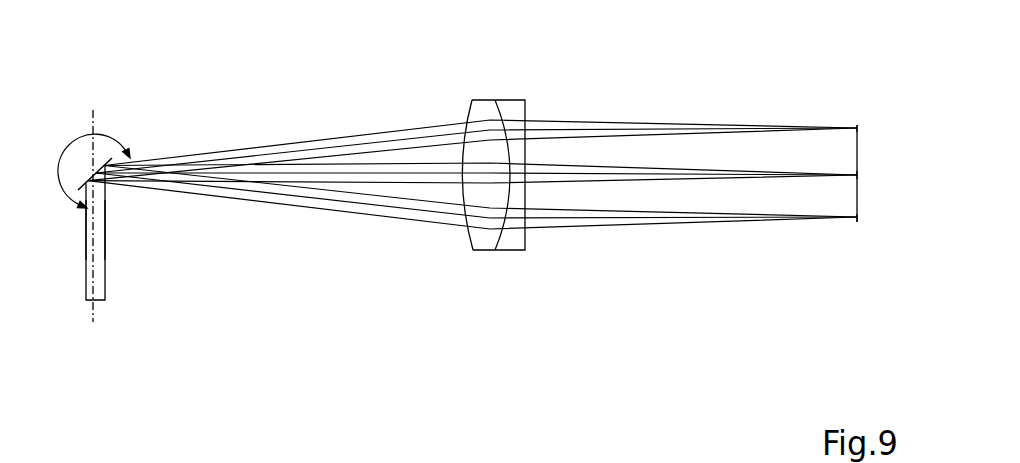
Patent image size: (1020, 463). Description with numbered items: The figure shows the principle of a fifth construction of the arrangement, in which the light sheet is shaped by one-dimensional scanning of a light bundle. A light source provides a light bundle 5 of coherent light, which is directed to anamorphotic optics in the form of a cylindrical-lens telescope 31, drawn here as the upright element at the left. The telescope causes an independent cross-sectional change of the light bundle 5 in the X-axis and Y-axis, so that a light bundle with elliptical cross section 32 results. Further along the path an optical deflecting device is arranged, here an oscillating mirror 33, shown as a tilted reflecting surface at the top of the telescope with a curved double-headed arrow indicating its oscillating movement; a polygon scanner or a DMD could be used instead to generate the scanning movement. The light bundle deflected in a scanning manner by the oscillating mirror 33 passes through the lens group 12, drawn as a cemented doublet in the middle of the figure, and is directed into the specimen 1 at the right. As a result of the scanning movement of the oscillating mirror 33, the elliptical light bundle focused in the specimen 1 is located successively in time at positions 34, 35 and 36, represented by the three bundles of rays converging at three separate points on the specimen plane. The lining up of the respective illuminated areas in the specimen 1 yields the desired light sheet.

The specimen 1 is at (858, 152).
The light bundle 5 is at (93, 320).
The lens group 12 is at (472, 112).
The cylindrical-lens telescope 31 is at (98, 300).
The light bundle with elliptical cross section 32 is at (100, 228).
The oscillating mirror 33 is at (96, 144).
The position 34 is at (857, 127).
The position 35 is at (857, 175).
The position 36 is at (856, 222).